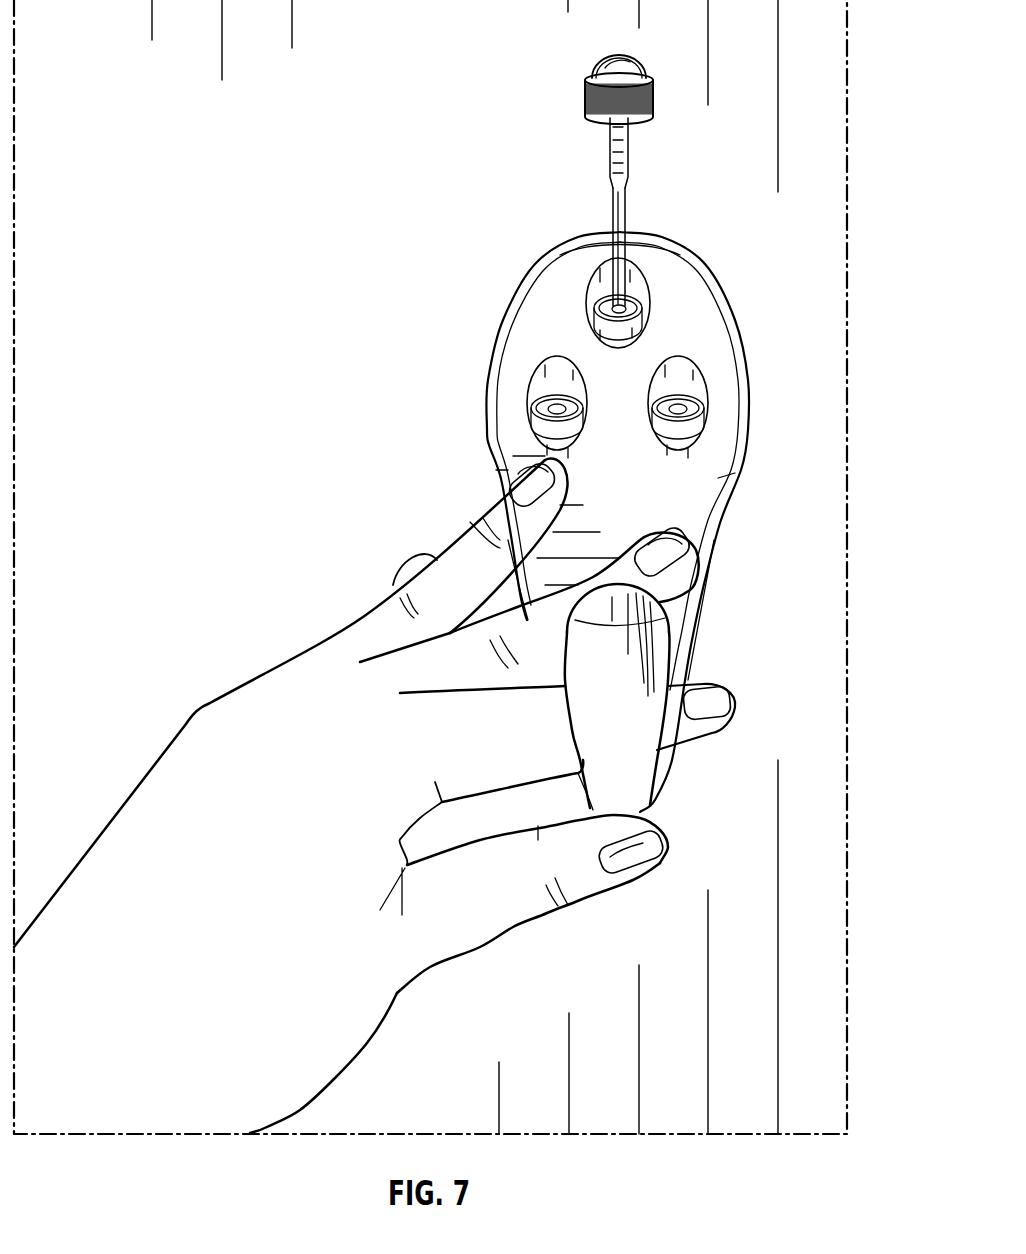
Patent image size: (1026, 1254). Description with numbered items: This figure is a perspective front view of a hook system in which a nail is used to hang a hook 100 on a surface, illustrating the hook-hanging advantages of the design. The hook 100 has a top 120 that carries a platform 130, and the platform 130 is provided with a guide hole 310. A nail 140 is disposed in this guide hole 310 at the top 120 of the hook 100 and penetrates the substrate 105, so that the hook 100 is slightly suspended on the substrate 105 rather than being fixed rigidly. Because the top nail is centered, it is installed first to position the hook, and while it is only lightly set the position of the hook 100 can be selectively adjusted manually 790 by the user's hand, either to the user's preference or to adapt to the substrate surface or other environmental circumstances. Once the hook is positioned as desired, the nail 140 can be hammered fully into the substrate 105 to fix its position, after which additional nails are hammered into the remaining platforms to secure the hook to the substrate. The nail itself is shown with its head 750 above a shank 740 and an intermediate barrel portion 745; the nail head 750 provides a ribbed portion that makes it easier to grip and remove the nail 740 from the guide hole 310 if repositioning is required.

The hook 100 is at (712, 580).
The substrate 105 is at (805, 385).
The top of hook 120 is at (695, 253).
The platform 130 is at (600, 335).
The nail 140 is at (643, 167).
The guide hole 310 is at (607, 300).
The nail 740 is at (664, 239).
The dropper barrel 745 is at (609, 150).
The nail head 750 is at (609, 57).
The manual adjustment 790 is at (515, 908).